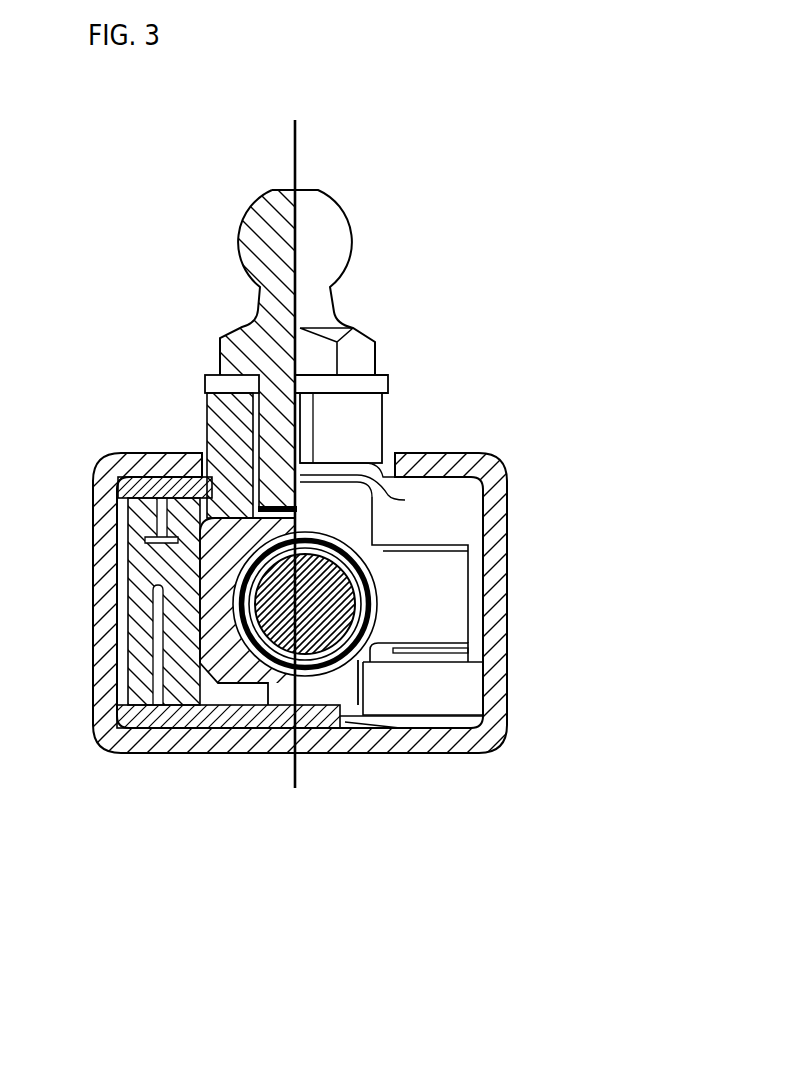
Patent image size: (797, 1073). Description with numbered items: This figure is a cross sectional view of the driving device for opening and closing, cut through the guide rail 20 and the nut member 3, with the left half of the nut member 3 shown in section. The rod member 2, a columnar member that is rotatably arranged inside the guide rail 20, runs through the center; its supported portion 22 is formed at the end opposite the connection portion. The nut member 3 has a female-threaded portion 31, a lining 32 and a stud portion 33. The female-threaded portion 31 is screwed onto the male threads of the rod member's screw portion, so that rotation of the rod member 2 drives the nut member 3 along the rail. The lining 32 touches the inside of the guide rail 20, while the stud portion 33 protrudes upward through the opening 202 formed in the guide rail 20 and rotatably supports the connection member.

The rod member 2 is at (300, 735).
The supported portion 22 is at (275, 628).
The nut member 3 is at (430, 577).
The guide rail 20 is at (507, 653).
The female-threaded portion 31 is at (343, 652).
The lining 32 is at (135, 452).
The stud portion 33 is at (328, 252).
The opening 202 is at (207, 455).